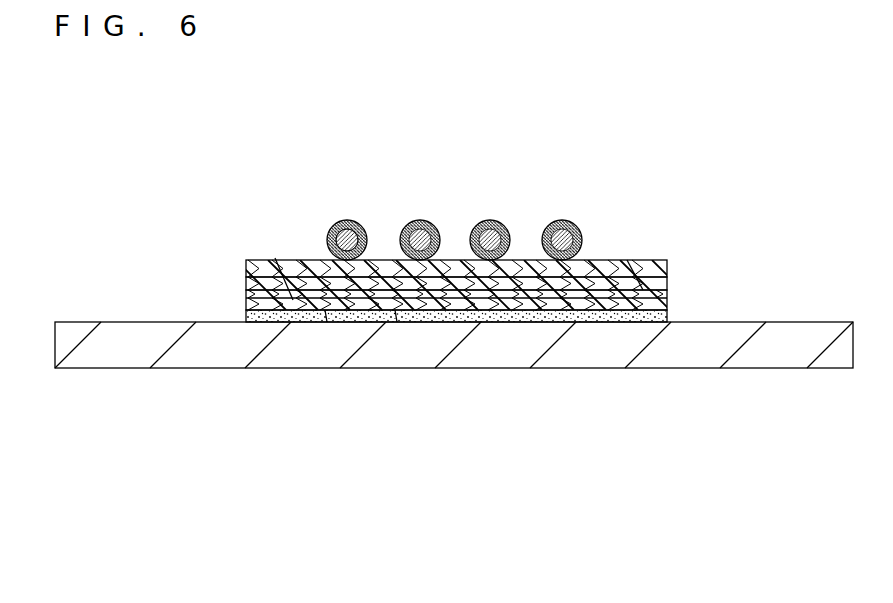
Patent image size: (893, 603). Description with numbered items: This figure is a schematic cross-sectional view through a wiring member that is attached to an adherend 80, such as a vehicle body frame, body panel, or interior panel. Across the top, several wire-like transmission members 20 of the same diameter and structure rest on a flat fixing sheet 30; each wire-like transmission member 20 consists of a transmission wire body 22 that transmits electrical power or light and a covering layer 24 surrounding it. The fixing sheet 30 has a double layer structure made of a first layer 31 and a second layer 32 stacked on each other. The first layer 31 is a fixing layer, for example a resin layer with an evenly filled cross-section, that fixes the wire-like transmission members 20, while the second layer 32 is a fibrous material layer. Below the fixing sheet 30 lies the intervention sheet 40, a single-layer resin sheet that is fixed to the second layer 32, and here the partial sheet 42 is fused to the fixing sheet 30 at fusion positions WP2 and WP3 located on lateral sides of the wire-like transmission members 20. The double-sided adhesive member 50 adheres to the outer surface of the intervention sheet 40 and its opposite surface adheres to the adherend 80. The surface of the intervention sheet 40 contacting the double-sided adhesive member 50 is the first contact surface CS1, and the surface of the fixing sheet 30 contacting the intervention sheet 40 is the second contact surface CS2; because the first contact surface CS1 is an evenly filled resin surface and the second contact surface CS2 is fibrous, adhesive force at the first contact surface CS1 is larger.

The wire-like transmission member 20 is at (450, 197).
The transmission wire body 22 is at (357, 222).
The covering layer 24 is at (341, 222).
The fixing sheet 30 is at (505, 250).
The first layer 31 is at (667, 262).
The second layer 32 is at (667, 277).
The intervention sheet 40 is at (508, 290).
The partial sheet 42 is at (667, 296).
The double-sided adhesive member 50 is at (667, 317).
The adherend 80 is at (498, 355).
The fusion position WP2 is at (275, 258).
The fusion position WP3 is at (627, 260).
The first contact surface CS1 is at (395, 310).
The second contact surface CS2 is at (325, 310).